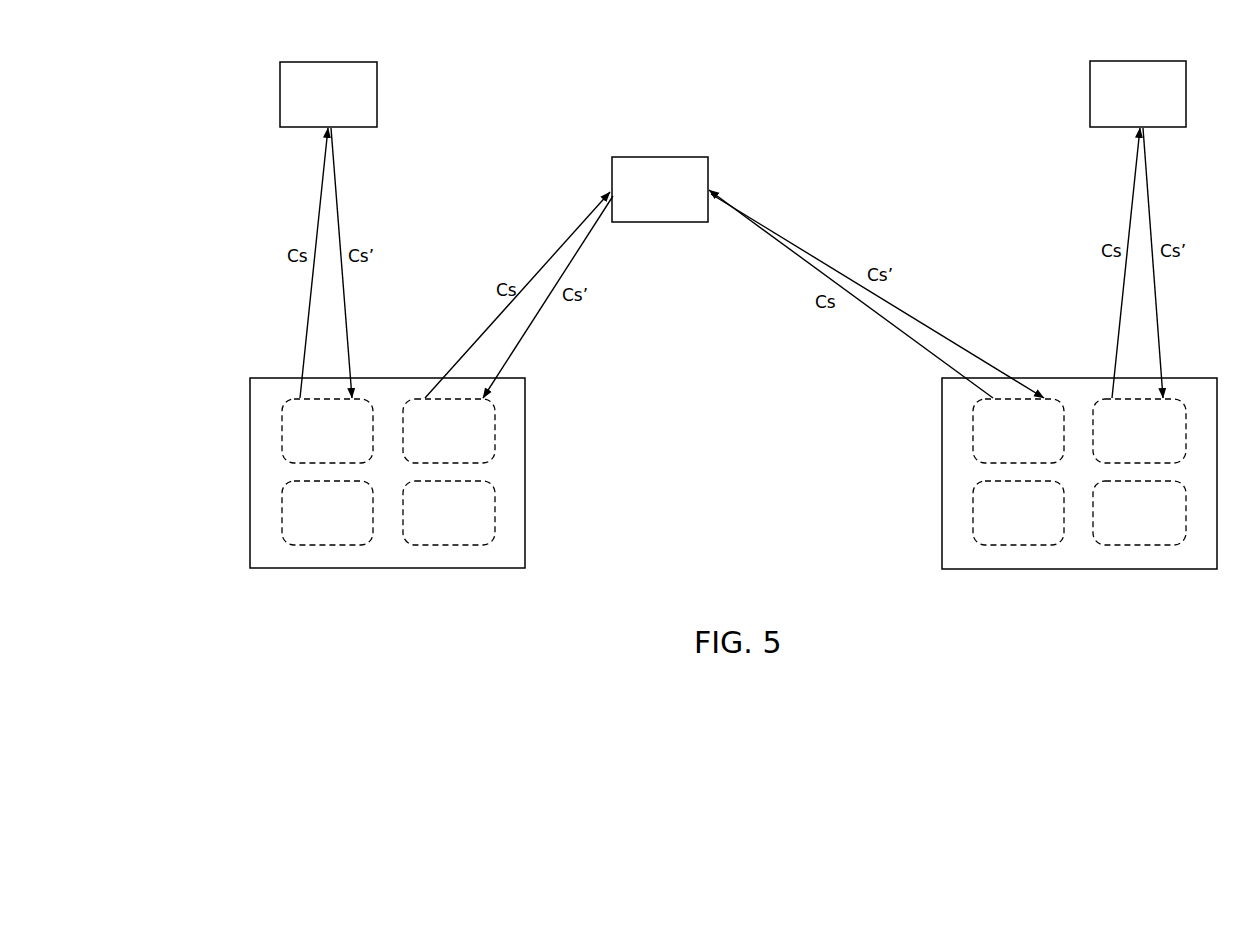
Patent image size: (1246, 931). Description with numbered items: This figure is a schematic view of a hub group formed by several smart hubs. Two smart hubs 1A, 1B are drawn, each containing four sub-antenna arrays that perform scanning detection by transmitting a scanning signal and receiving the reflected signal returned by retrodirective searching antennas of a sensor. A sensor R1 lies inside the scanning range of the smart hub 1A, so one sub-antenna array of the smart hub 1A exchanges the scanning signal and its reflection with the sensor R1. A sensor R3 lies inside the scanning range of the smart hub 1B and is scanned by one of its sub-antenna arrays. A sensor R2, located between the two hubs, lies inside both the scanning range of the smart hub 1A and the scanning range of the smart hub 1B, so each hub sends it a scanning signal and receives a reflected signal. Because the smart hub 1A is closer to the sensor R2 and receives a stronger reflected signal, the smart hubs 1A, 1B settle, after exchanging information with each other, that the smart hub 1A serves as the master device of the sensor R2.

The sensor R1 is at (280, 98).
The sensor R2 is at (612, 175).
The sensor R3 is at (1090, 82).
The smart hub 1A is at (250, 415).
The smart hub 1B is at (942, 415).